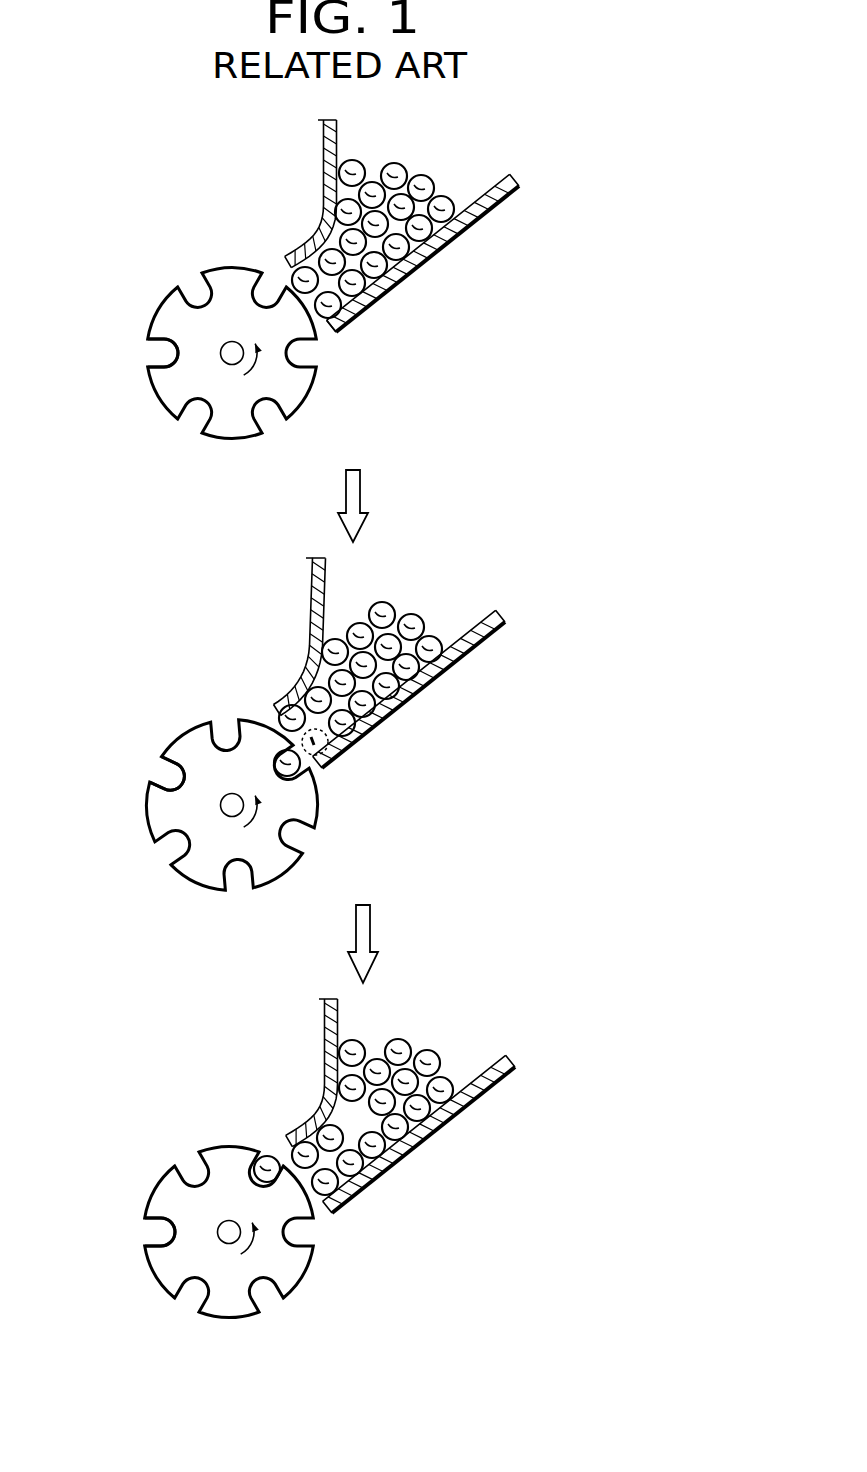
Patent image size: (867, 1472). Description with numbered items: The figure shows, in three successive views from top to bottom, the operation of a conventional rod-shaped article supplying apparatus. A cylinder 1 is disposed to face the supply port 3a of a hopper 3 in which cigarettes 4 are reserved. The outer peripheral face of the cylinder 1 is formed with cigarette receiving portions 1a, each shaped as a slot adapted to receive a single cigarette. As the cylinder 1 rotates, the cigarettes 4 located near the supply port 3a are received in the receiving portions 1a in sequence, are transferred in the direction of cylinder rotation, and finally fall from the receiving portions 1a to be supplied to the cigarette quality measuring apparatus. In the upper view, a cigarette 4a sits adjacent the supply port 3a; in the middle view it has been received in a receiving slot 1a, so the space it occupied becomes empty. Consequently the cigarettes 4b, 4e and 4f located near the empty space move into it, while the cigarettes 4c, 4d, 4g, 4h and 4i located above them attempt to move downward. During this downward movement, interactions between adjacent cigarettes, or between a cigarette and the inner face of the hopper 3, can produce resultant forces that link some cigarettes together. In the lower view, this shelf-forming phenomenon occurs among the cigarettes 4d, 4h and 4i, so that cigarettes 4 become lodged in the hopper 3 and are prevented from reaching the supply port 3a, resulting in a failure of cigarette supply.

The cylinder 1 is at (140, 392).
The cigarette receiving portion 1a is at (168, 356).
The hopper 3 is at (500, 216).
The supply port 3a is at (333, 342).
The cigarettes 4 is at (443, 150).
The cigarette 4a is at (343, 314).
The cigarette 4b is at (375, 292).
The cigarette 4c is at (395, 270).
The cigarette 4d is at (412, 250).
The cigarette 4e is at (293, 278).
The cigarette 4f is at (327, 260).
The cigarette 4g is at (350, 243).
The cigarette 4h is at (370, 227).
The cigarette 4i is at (343, 207).